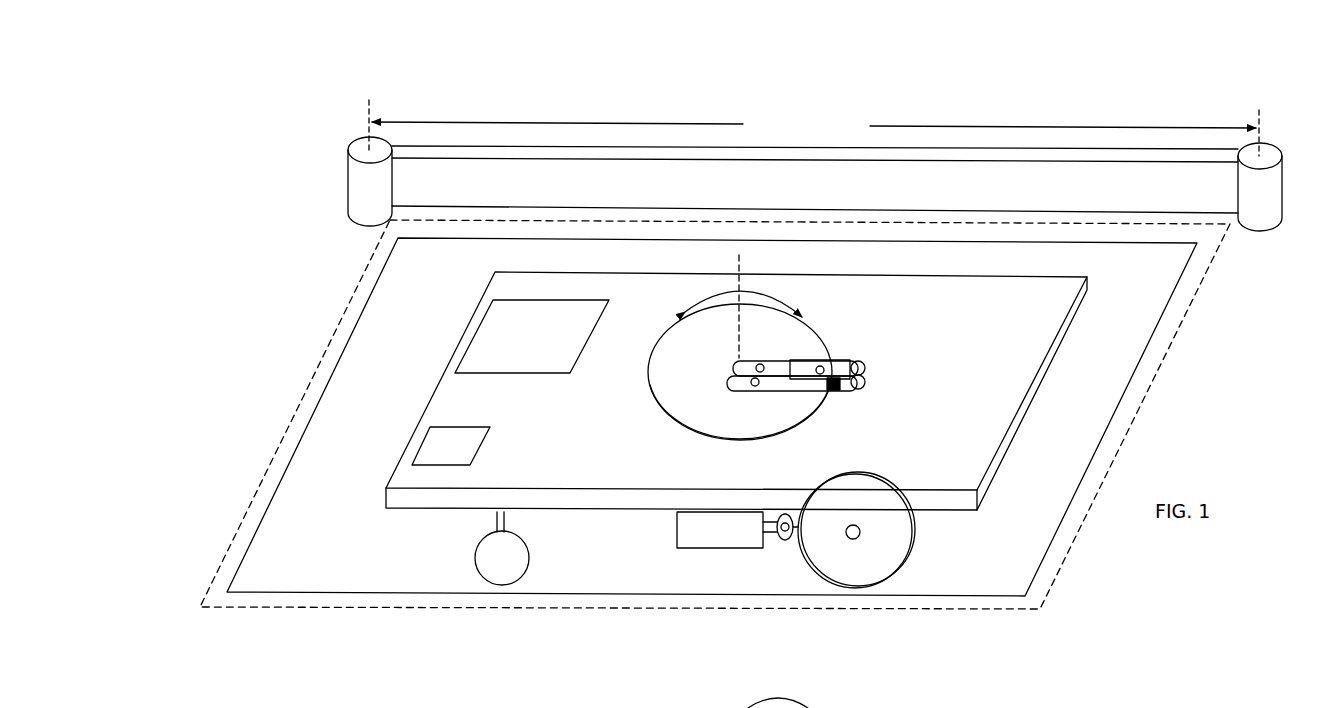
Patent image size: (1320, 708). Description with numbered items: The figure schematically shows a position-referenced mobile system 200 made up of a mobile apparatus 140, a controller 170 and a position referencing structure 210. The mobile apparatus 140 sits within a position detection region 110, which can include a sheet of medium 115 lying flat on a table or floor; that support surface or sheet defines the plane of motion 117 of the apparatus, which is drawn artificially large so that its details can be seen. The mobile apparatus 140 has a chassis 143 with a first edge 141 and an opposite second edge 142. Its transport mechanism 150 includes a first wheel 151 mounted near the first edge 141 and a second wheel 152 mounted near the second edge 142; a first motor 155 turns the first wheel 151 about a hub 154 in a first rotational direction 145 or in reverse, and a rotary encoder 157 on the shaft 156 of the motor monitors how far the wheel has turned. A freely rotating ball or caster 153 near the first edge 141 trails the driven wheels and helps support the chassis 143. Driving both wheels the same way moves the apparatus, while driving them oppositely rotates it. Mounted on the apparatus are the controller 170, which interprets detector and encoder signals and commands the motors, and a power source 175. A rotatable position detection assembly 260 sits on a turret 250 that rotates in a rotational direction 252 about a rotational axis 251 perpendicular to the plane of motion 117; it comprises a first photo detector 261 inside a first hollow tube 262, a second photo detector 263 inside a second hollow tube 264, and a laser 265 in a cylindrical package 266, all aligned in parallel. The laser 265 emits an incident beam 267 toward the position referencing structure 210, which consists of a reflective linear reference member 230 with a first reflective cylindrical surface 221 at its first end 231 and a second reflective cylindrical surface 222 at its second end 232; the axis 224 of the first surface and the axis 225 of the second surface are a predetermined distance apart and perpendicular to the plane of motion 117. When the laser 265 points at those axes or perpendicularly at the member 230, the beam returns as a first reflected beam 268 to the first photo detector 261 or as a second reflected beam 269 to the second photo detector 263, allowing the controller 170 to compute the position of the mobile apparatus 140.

The position detection region 110 is at (303, 395).
The sheet of medium 115 is at (382, 355).
The plane of motion 117 is at (216, 490).
The mobile apparatus 140 is at (1068, 398).
The first edge 141 is at (440, 502).
The second edge 142 is at (523, 270).
The chassis 143 is at (1033, 342).
The first rotational direction 145 is at (817, 473).
The transport mechanism 150 is at (730, 573).
The first wheel 151 is at (910, 548).
The second wheel 152 is at (972, 272).
The freely rotating ball or caster 153 is at (487, 583).
The hub 154 is at (850, 538).
The first motor 155 is at (713, 531).
The shaft 156 is at (795, 535).
The rotary encoder 157 is at (778, 549).
The controller 170 is at (450, 425).
The power source 175 is at (482, 348).
The position-referenced mobile system 200 is at (256, 77).
The position referencing structure 210 is at (296, 172).
The first reflective cylindrical surface 221 is at (363, 190).
The second reflective cylindrical surface 222 is at (1258, 198).
The axis 224 is at (368, 113).
The axis 225 is at (1258, 115).
The reflective linear reference member 230 is at (785, 177).
The first end 231 is at (390, 208).
The second end 232 is at (1238, 217).
The turret 250 is at (745, 448).
The rotational axis 251 is at (741, 258).
The rotational direction 252 is at (757, 302).
The rotatable position detection assembly 260 is at (896, 304).
The first photo detector 261 is at (757, 362).
The first hollow tube 262 is at (748, 370).
The second photo detector 263 is at (745, 380).
The second hollow tube 264 is at (735, 388).
The laser 265 is at (820, 362).
The cylindrical package 266 is at (838, 357).
The incident beam 267 is at (891, 370).
The first reflected beam 268 is at (914, 365).
The second reflected beam 269 is at (914, 383).